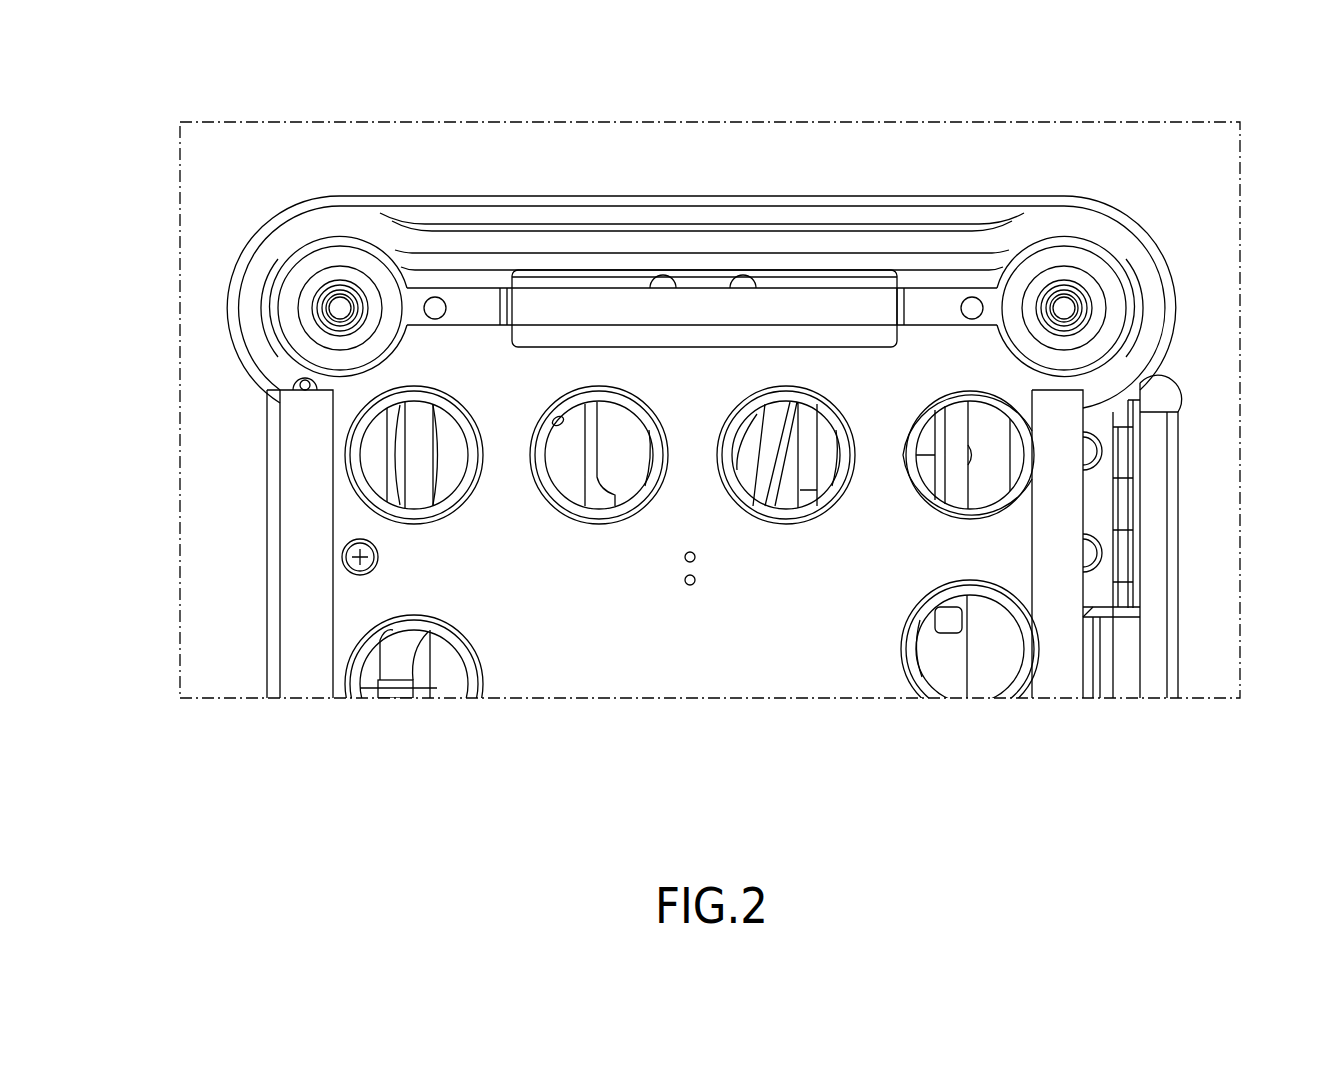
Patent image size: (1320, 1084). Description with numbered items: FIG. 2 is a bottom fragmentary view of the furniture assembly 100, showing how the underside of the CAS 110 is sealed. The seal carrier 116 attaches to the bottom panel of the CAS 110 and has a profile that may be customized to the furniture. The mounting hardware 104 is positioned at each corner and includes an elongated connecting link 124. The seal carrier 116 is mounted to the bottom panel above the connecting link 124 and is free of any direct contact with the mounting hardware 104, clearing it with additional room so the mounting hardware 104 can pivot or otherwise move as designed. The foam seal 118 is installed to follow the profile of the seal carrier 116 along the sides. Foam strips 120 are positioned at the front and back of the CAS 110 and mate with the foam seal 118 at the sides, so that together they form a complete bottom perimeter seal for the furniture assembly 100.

The imaging device 100 is at (298, 160).
The hub assembly 104 is at (292, 287).
The top plate 110 is at (782, 217).
The cross bar 116 is at (858, 260).
The ring 118 is at (250, 307).
The leg 120 is at (297, 490).
The panel 124 is at (698, 305).